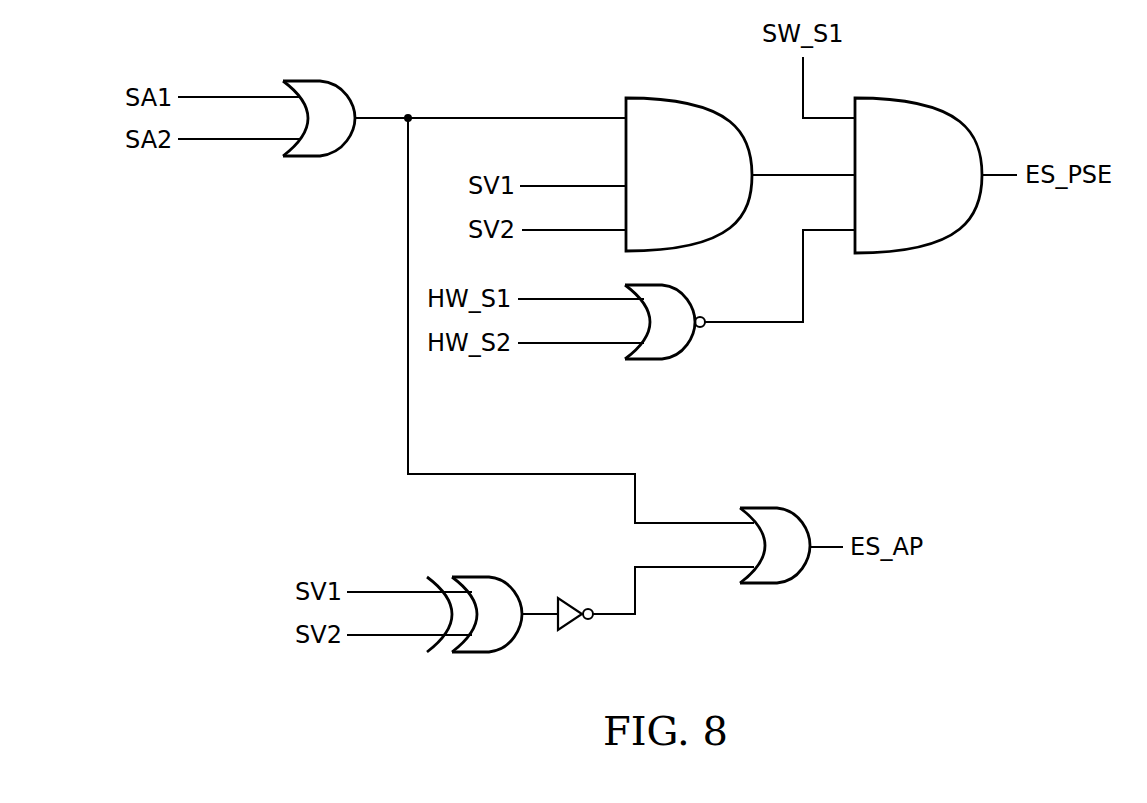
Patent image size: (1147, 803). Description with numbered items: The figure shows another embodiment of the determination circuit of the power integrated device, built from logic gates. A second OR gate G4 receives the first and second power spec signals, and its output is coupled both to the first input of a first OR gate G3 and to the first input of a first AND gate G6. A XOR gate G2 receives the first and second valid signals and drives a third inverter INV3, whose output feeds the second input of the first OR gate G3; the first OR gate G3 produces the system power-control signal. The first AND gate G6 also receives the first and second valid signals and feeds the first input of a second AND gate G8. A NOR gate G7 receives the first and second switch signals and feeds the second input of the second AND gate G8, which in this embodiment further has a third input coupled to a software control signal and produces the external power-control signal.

The second OR gate G4 is at (325, 80).
The first AND gate G6 is at (695, 105).
The second AND gate G8 is at (923, 105).
The NOR gate G7 is at (668, 360).
The first OR gate G3 is at (780, 507).
The XOR gate G2 is at (500, 578).
The third inverter INV3 is at (575, 628).